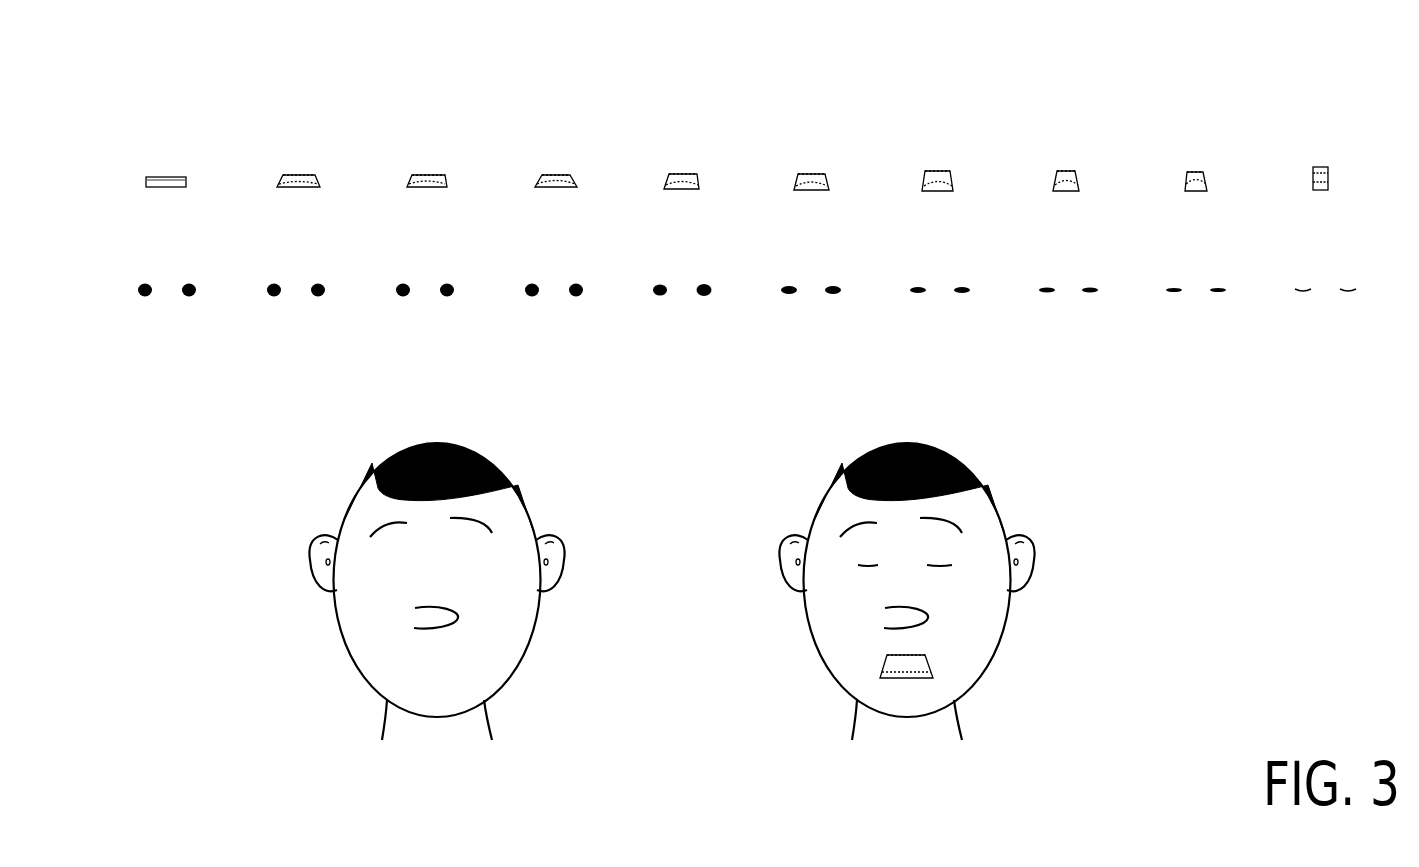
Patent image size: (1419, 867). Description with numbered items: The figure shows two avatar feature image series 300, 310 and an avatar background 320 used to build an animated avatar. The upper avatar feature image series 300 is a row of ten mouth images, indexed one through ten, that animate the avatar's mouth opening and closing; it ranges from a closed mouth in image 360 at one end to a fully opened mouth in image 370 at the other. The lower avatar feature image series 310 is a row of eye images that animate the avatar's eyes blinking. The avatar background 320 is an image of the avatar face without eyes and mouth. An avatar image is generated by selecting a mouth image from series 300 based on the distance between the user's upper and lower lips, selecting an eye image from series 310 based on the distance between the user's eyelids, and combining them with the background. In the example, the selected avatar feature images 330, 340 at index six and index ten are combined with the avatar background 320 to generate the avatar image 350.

The avatar feature image series 300 is at (402, 98).
The avatar feature image series 310 is at (189, 339).
The avatar background 320 is at (348, 458).
The selected avatar feature image 330 is at (832, 199).
The selected avatar feature image 340 is at (1313, 303).
The avatar image 350 is at (818, 458).
The image 360 is at (187, 202).
The image 370 is at (1330, 205).